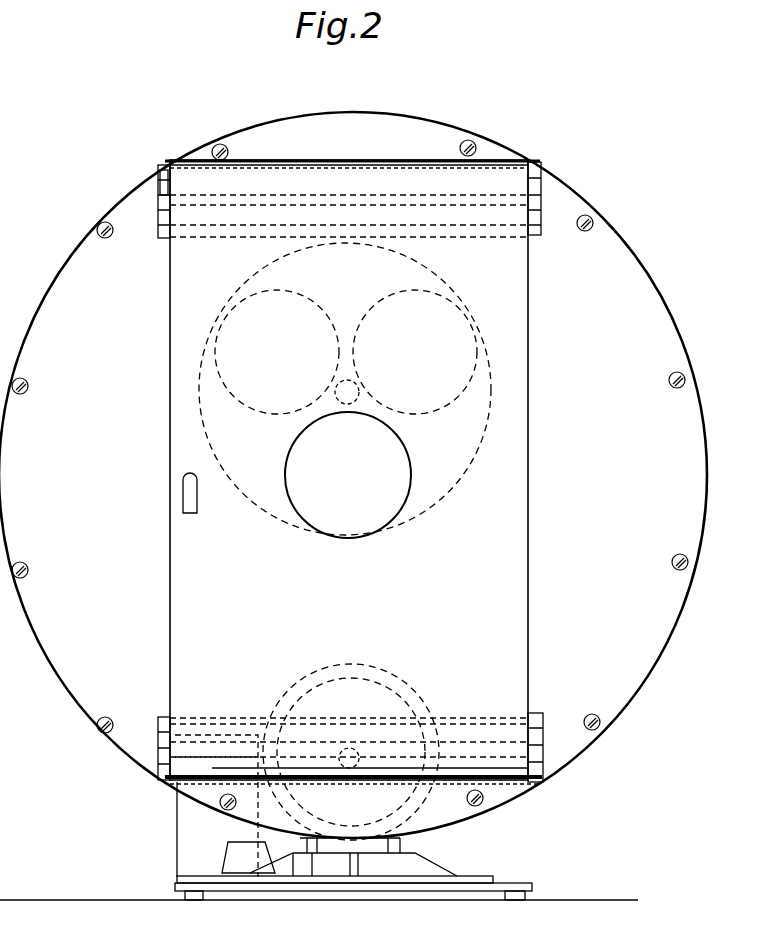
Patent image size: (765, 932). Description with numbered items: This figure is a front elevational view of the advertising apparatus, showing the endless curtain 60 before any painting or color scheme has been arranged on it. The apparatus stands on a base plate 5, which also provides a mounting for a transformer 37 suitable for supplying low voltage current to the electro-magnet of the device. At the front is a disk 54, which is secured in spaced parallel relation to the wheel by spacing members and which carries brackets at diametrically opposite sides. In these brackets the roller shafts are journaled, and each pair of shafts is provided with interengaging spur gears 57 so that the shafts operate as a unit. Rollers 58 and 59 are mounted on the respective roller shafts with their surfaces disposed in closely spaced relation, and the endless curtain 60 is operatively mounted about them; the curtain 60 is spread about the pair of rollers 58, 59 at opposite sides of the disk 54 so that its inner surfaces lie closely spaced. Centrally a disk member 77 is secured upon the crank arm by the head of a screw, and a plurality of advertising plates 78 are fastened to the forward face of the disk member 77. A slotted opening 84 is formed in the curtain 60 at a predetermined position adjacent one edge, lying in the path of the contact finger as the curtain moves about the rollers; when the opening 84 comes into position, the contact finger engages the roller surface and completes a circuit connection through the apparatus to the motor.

The base plate 5 is at (515, 884).
The transformer 37 is at (183, 838).
The disk 54 is at (628, 692).
The spur gears 57 is at (158, 186).
The roller 58 is at (246, 215).
The roller 59 is at (328, 182).
The endless curtain 60 is at (517, 618).
The disk member 77 is at (470, 437).
The advertising plates 78 is at (378, 517).
The slotted opening 84 is at (198, 510).